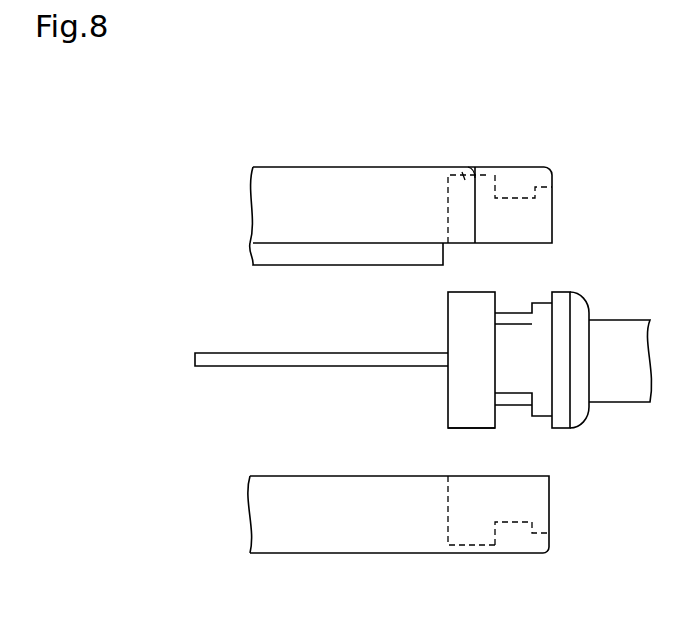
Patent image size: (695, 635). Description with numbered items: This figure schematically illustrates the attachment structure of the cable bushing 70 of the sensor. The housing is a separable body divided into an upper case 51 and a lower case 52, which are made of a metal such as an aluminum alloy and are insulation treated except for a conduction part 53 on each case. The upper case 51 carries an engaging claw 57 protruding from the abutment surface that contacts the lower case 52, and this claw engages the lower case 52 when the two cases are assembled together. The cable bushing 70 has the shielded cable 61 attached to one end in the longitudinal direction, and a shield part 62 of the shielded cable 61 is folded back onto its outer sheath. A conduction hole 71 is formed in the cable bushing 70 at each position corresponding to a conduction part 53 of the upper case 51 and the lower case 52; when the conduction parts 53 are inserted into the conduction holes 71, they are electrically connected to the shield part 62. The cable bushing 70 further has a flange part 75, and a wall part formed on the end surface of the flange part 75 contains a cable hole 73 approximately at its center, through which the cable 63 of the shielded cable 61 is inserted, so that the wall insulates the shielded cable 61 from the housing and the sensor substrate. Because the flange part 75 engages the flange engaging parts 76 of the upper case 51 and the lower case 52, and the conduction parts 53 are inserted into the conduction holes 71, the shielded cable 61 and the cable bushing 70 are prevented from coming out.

The upper case 51 is at (333, 186).
The lower case 52 is at (330, 530).
The conduction part 53 is at (508, 203).
The engaging claw 57 is at (315, 253).
The shielded cable 61 is at (608, 382).
The shield part 62 is at (517, 320).
The cable 63 is at (232, 360).
The cable bushing 70 is at (580, 307).
The conduction hole 71 is at (510, 302).
The cable hole 73 is at (447, 368).
The flange part 75 is at (472, 418).
The flange engaging part 76 is at (461, 168).